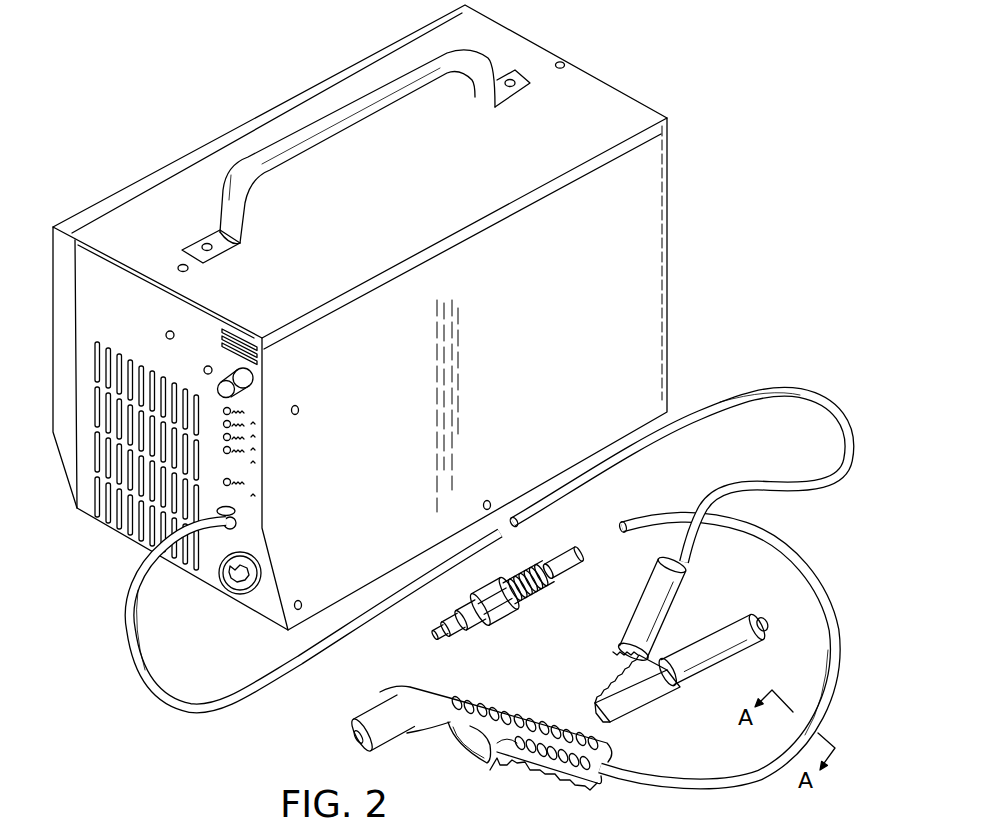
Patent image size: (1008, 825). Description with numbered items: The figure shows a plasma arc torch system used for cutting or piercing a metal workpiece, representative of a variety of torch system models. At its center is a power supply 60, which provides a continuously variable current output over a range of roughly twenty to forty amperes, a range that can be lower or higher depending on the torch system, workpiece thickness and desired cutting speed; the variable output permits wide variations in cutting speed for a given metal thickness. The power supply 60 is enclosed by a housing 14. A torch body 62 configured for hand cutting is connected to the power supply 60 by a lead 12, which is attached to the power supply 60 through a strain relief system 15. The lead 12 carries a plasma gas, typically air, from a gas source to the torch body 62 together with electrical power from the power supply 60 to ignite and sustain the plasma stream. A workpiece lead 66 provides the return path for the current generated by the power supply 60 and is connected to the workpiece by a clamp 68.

The lead 12 is at (827, 590).
The housing 14 is at (657, 226).
The strain relief system 15 is at (522, 612).
The power supply 60 is at (669, 155).
The torch body 62 is at (507, 767).
The workpiece lead 66 is at (837, 408).
The clamp 68 is at (638, 708).